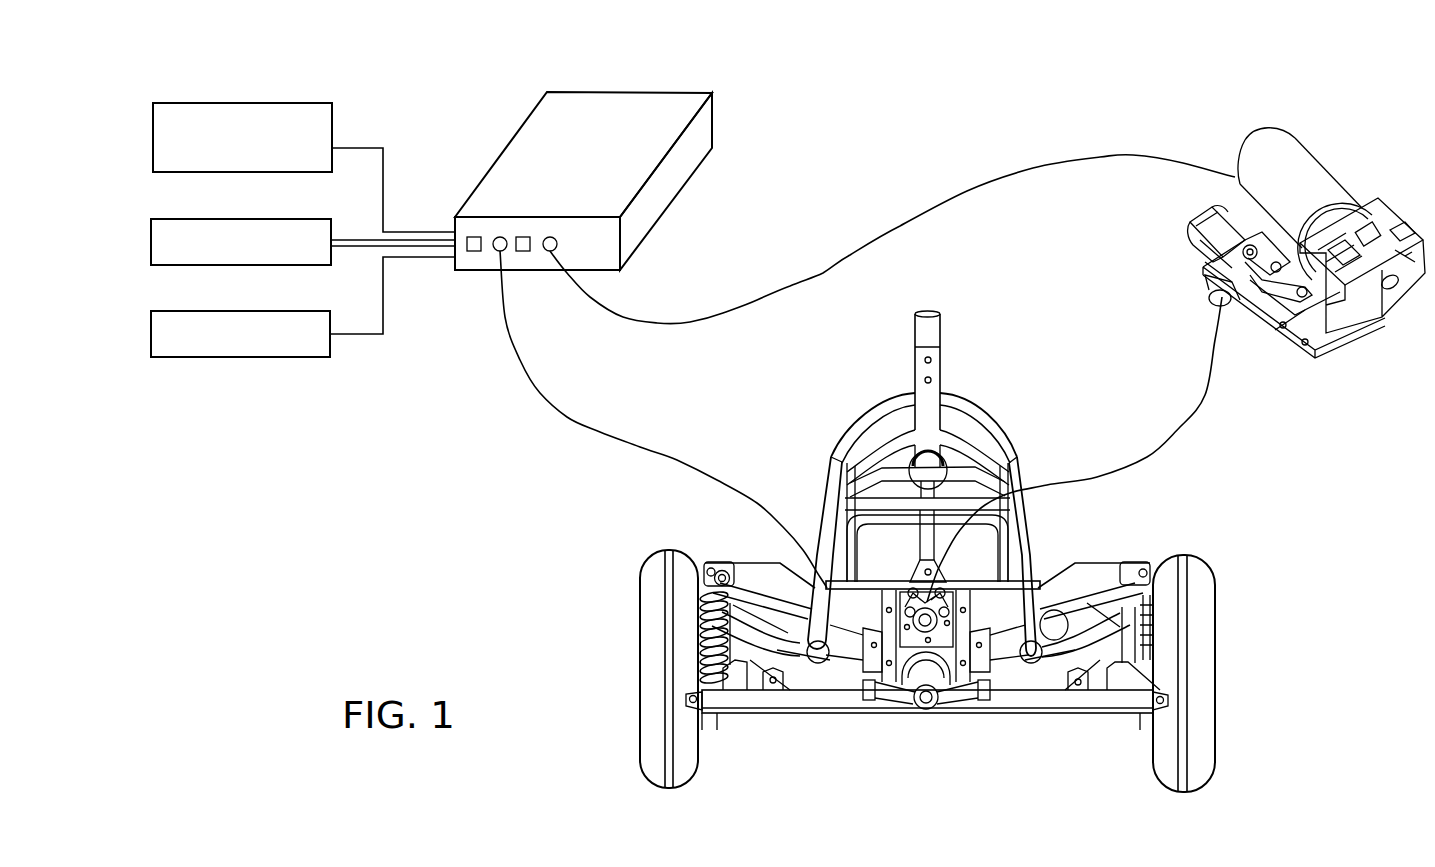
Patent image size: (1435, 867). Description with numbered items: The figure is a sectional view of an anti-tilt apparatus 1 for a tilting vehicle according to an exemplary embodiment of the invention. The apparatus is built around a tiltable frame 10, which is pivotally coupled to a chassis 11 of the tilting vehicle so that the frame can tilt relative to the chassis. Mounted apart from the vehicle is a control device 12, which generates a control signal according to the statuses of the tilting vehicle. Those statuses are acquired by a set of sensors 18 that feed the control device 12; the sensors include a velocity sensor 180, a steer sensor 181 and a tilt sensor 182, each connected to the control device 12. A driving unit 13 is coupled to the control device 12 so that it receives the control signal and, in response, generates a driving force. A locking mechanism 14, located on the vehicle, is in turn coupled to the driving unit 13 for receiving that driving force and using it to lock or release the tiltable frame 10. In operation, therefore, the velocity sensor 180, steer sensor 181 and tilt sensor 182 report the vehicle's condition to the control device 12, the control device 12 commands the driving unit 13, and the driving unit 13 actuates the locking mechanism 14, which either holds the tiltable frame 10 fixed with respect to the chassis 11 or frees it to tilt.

The steering control system 1 is at (432, 117).
The tiltable frame 10 is at (1013, 473).
The chassis 11 is at (803, 703).
The control device 12 is at (660, 105).
The driving unit 13 is at (1360, 152).
The locking mechanism 14 is at (940, 642).
The sensors 18 is at (184, 75).
The velocity sensor 180 is at (207, 103).
The steer sensor 181 is at (207, 219).
The tilt sensor 182 is at (205, 311).